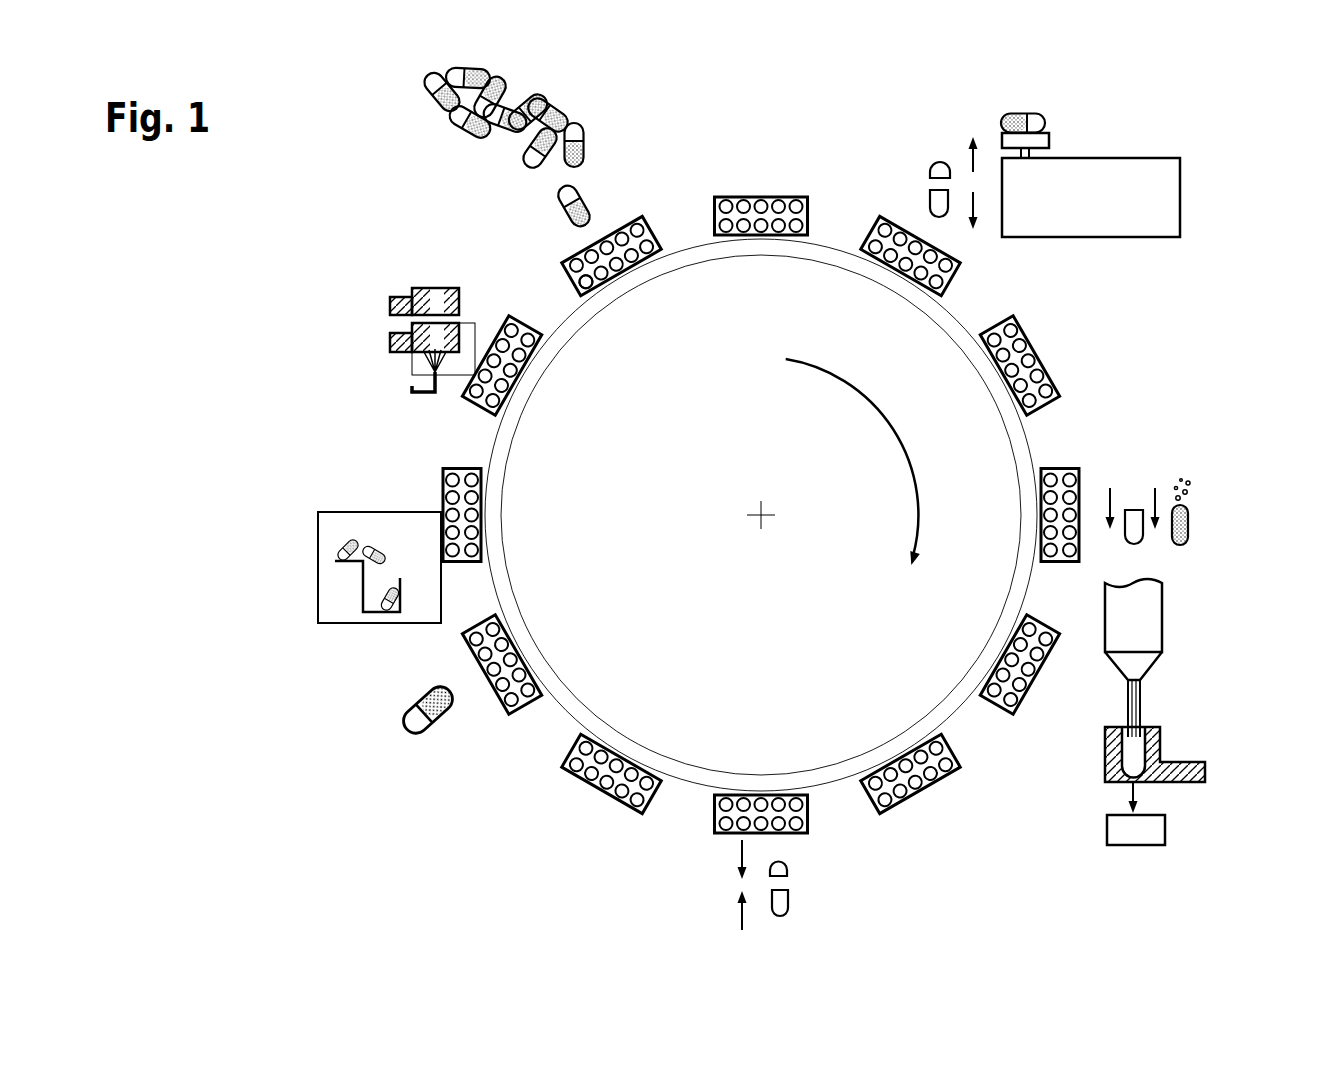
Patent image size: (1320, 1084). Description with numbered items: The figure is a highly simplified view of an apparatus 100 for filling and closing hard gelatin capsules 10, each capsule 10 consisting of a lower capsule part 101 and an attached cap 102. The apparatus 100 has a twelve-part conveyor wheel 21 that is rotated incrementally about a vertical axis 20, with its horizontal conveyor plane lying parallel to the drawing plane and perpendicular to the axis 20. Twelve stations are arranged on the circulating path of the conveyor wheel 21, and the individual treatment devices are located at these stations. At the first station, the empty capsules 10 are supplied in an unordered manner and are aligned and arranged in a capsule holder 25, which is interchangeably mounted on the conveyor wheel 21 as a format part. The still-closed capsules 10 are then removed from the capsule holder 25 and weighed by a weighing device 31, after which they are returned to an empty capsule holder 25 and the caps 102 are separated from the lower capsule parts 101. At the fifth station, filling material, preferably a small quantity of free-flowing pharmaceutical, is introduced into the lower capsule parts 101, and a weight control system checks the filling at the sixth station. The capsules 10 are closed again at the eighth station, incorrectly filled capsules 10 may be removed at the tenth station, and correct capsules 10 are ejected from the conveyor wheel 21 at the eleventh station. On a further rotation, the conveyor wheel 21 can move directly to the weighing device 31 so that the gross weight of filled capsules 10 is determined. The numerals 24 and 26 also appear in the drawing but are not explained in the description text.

The capsule 10 is at (466, 133).
The vertical axis 20 is at (764, 518).
The conveyor wheel 21 is at (972, 305).
The filling station 24 is at (1160, 737).
The capsule holder 25 is at (623, 225).
The receptacle in carrier 26 is at (580, 266).
The weighing device 31 is at (1163, 193).
The apparatus 100 is at (669, 515).
The lower capsule part 101 is at (933, 197).
The cap 102 is at (940, 168).